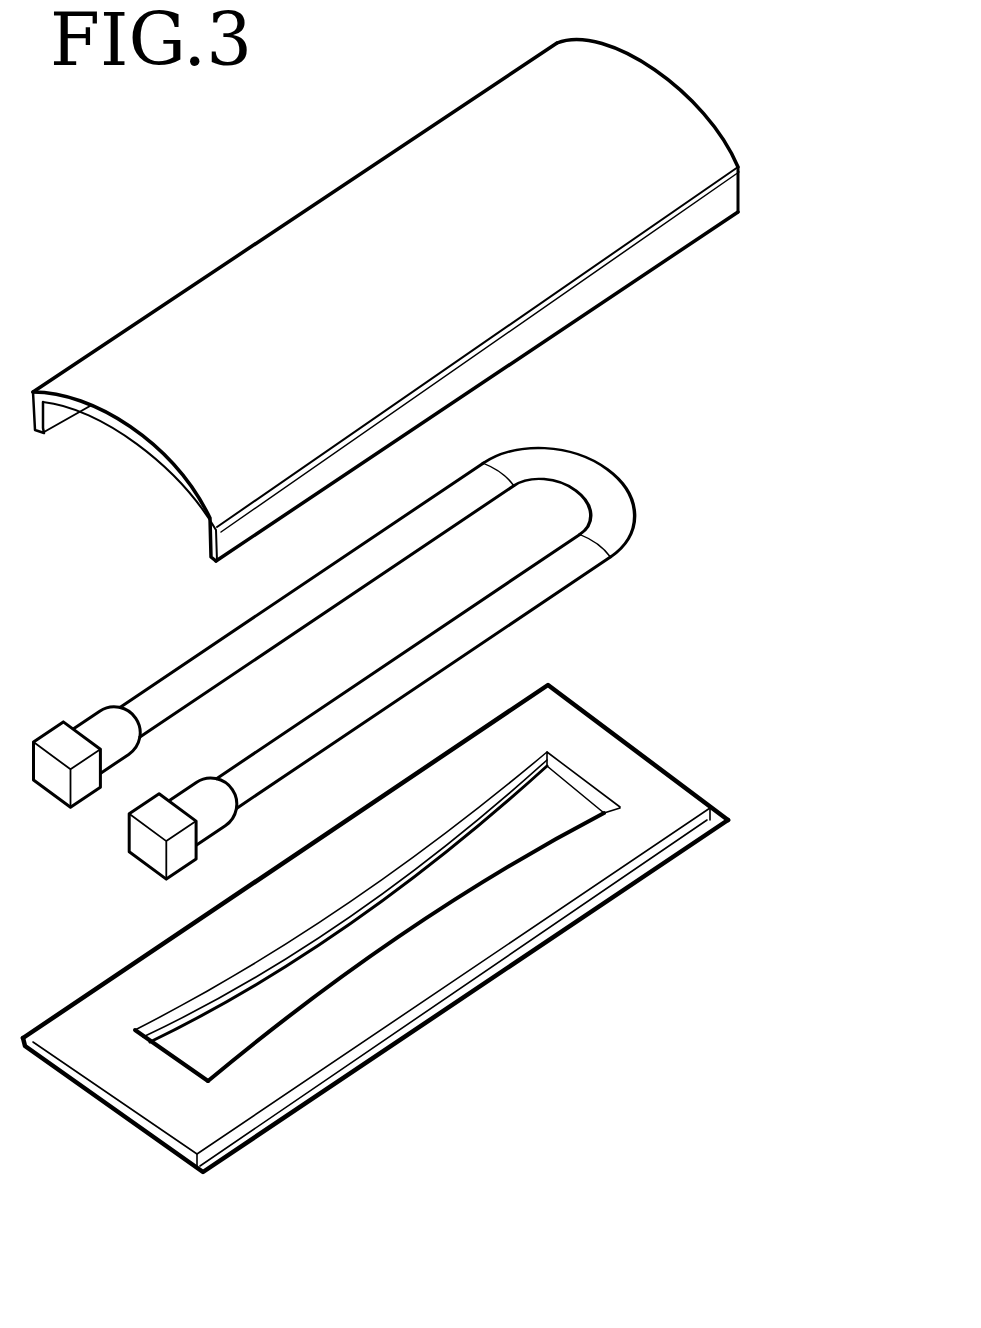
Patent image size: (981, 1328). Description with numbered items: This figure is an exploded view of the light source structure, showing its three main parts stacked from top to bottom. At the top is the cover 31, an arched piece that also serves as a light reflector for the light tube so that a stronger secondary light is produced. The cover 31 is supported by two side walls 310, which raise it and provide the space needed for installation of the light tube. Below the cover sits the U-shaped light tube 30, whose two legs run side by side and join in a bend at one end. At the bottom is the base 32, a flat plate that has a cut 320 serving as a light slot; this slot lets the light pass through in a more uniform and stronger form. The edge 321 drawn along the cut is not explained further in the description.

The U-shaped light tube 30 is at (603, 492).
The cover 31 is at (673, 108).
The side wall 310 is at (731, 198).
The base 32 is at (404, 940).
The cut 320 is at (267, 990).
The curved edge of slit 321 is at (410, 930).